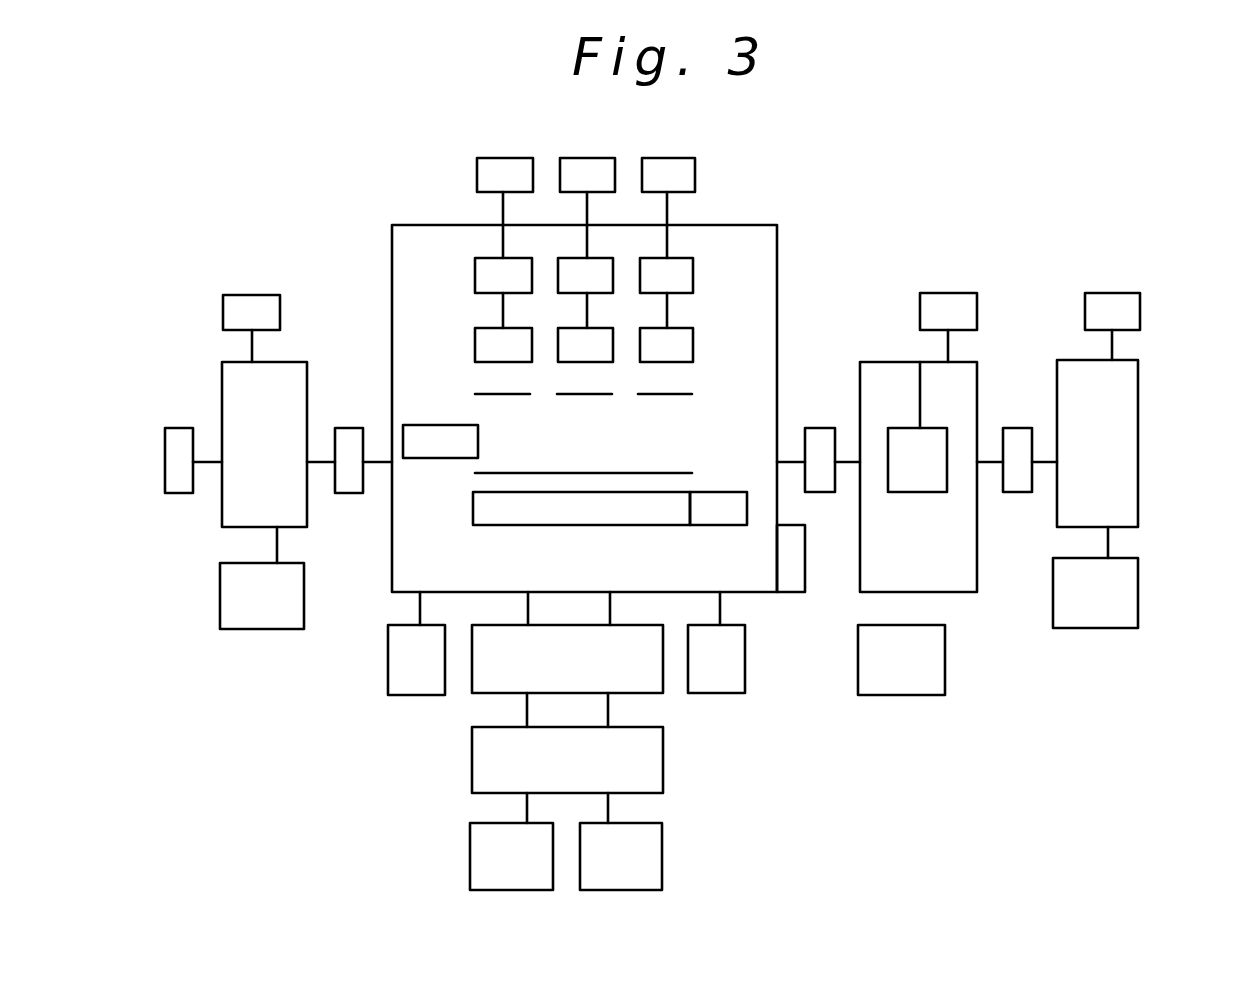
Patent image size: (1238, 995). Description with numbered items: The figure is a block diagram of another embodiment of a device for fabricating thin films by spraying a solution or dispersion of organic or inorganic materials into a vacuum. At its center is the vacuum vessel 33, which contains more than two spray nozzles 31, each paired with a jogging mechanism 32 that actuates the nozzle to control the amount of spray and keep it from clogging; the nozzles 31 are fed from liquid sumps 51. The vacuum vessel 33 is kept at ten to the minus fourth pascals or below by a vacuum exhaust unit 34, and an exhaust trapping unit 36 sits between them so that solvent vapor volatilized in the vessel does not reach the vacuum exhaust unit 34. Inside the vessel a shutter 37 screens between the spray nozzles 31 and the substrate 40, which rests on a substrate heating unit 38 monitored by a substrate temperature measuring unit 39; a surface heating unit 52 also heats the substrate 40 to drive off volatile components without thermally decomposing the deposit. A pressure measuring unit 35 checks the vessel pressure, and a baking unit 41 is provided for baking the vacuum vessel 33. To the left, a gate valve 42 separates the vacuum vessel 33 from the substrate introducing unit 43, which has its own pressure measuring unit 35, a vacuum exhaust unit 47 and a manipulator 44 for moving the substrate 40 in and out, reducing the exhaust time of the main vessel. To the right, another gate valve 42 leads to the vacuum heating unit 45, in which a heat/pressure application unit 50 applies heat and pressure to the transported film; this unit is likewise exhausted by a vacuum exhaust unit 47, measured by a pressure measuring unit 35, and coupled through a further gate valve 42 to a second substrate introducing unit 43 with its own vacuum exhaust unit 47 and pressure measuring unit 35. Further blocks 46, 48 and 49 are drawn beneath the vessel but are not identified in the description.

The spray nozzles 31 is at (693, 333).
The jogging mechanisms 32 is at (693, 262).
The vacuum vessel 33 is at (778, 270).
The vacuum exhaust unit 34 is at (470, 853).
The pressure measuring unit 35 is at (733, 718).
The exhaust trapping unit 36 is at (663, 760).
The shutter 37 is at (658, 395).
The substrate heating unit 38 is at (663, 527).
The substrate temperature measuring unit 39 is at (723, 527).
The substrate 40 is at (670, 472).
The baking unit 41 is at (792, 595).
The gate valve 42 is at (1017, 428).
The substrate introducing unit 43 is at (1138, 387).
The manipulator 44 is at (182, 428).
The vacuum heating unit 45 is at (977, 378).
The display 46 is at (408, 697).
The vacuum exhaust unit 47 is at (1095, 655).
The output device 48 is at (662, 860).
The keyboard 49 is at (470, 695).
The heat/pressure application unit 50 is at (920, 494).
The liquid sumps 51 is at (653, 157).
The surface heating unit 52 is at (428, 460).